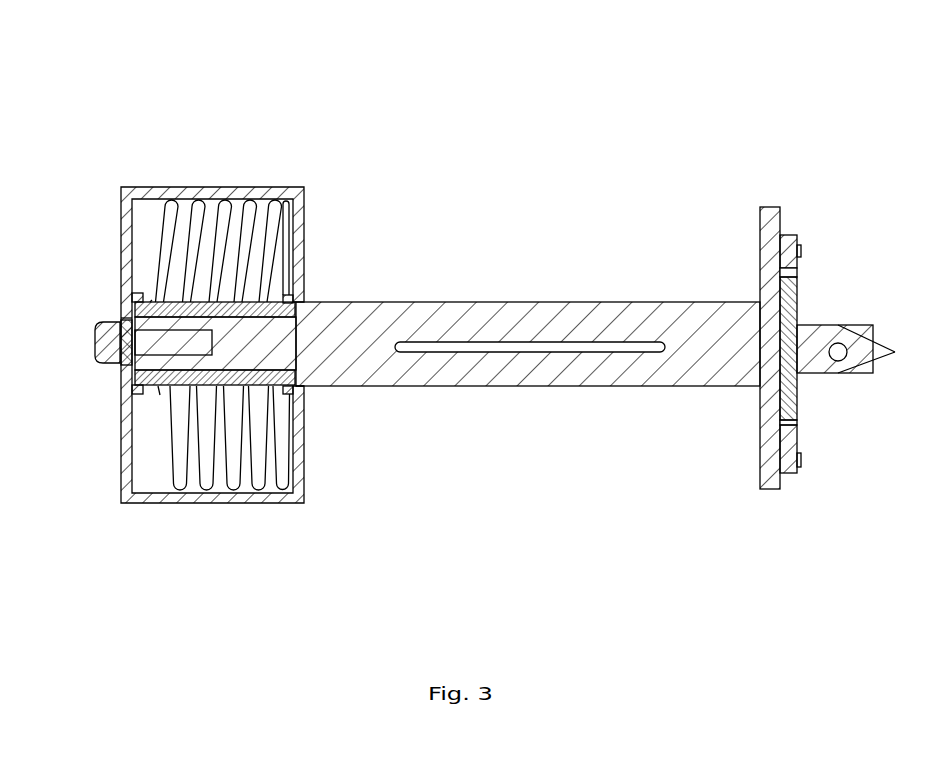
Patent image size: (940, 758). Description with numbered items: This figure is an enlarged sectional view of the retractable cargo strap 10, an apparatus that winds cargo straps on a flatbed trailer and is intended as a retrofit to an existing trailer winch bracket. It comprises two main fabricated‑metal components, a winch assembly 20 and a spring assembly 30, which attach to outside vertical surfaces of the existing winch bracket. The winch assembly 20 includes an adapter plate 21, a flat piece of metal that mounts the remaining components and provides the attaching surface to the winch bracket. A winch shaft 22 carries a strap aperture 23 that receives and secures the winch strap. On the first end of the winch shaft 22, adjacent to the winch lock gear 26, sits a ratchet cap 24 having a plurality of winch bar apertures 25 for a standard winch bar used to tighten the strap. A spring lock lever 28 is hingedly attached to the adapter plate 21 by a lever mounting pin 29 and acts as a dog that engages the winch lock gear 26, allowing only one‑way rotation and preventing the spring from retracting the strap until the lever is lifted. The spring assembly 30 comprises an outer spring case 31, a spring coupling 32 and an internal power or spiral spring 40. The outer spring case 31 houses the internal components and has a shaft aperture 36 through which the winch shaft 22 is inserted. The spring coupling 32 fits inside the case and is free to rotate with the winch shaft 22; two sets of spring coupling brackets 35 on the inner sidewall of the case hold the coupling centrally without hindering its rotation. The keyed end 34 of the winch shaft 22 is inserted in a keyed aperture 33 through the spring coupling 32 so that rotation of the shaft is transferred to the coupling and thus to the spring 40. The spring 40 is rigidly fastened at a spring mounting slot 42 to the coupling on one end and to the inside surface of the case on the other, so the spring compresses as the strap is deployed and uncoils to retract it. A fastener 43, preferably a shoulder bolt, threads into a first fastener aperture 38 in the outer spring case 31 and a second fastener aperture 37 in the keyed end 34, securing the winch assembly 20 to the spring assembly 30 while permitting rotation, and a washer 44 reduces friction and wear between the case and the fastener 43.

The retractable cargo strap 10 is at (66, 102).
The winch assembly 20 is at (760, 508).
The adapter plate 21 is at (770, 474).
The winch shaft 22 is at (545, 303).
The strap aperture 23 is at (520, 348).
The ratchet cap 24 is at (868, 326).
The winch bar apertures 25 is at (838, 352).
The winch lock gear 26 is at (793, 306).
The spring lock lever 28 is at (792, 240).
The lever mounting pin 29 is at (804, 252).
The spring assembly 30 is at (226, 526).
The outer spring case 31 is at (122, 462).
The spring coupling 32 is at (288, 303).
The keyed aperture 33 is at (158, 386).
The keyed end 34 is at (273, 338).
The spring coupling brackets 35 is at (134, 294).
The shaft aperture 36 is at (300, 386).
The second fastener aperture 37 is at (121, 318).
The first fastener aperture 38 is at (150, 342).
The spring 40 is at (221, 205).
The spring mounting slot 42 is at (288, 200).
The fastener 43 is at (95, 335).
The washer 44 is at (122, 365).